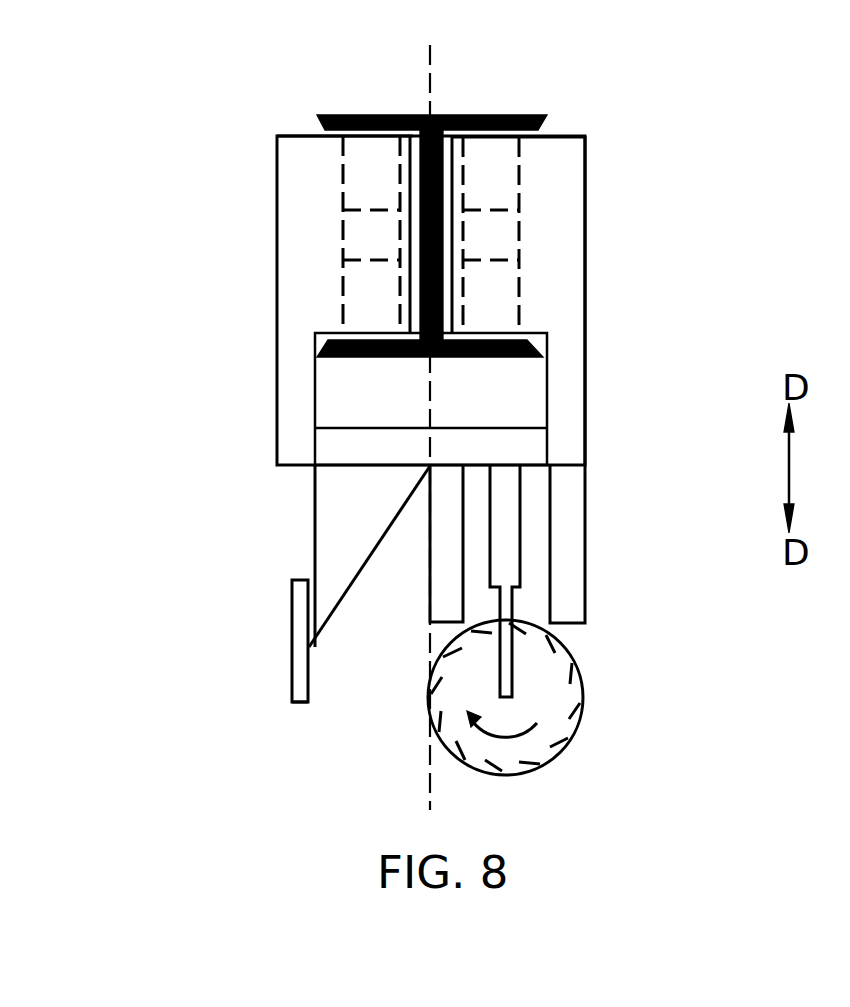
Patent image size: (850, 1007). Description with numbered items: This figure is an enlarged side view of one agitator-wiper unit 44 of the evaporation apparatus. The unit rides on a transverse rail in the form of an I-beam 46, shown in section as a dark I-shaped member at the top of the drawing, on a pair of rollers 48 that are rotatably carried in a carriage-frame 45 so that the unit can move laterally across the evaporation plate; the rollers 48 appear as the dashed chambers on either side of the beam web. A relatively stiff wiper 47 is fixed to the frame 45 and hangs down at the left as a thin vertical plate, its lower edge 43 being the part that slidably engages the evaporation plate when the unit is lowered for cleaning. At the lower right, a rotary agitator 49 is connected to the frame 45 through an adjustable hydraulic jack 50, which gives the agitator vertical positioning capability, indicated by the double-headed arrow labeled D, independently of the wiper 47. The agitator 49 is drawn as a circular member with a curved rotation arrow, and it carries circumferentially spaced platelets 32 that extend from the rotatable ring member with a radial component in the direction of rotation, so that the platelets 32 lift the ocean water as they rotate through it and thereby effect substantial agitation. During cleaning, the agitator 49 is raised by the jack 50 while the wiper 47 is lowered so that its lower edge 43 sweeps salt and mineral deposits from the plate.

The platelets 32 is at (545, 757).
The lower edge of wiper 43 is at (298, 703).
The agitator-wiper unit 44 is at (652, 235).
The carriage-frame 45 is at (587, 307).
The I-beam 46 is at (515, 107).
The wiper 47 is at (290, 632).
The rollers 48 is at (342, 180).
The rotary agitator 49 is at (580, 715).
The adjustable hydraulic jack 50 is at (520, 558).